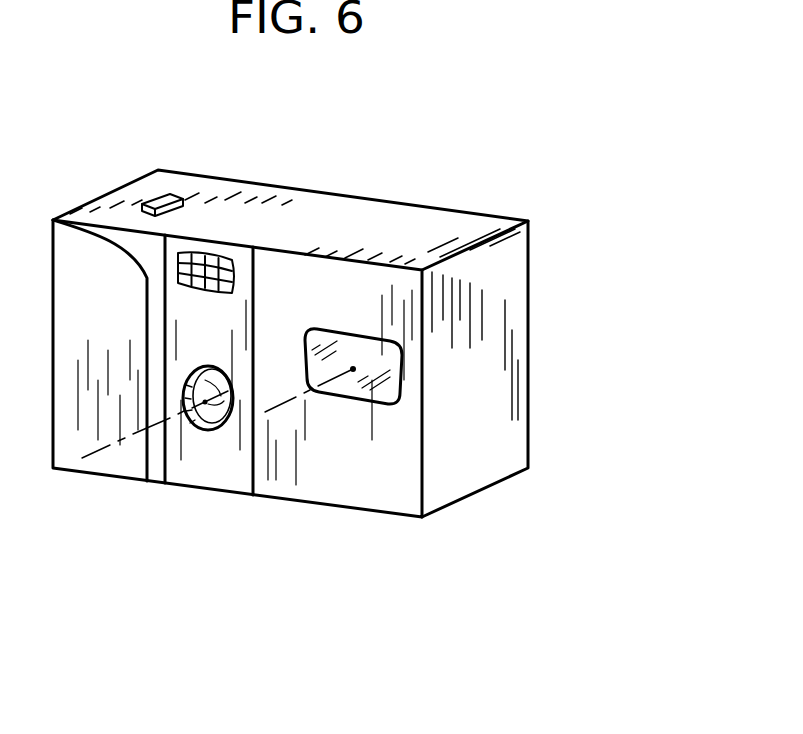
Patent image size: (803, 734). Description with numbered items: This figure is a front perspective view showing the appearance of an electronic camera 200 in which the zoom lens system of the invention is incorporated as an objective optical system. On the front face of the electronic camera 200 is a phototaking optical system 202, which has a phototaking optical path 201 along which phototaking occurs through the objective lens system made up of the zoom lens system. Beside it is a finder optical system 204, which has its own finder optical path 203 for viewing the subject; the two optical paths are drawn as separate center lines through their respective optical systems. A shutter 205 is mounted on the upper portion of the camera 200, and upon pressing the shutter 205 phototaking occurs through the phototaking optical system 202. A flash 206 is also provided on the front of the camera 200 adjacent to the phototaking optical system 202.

The electronic camera 200 is at (562, 420).
The phototaking optical path 201 is at (103, 452).
The phototaking optical system 202 is at (210, 432).
The finder optical path 203 is at (277, 407).
The finder optical system 204 is at (392, 358).
The shutter 205 is at (166, 193).
The flash 206 is at (226, 258).